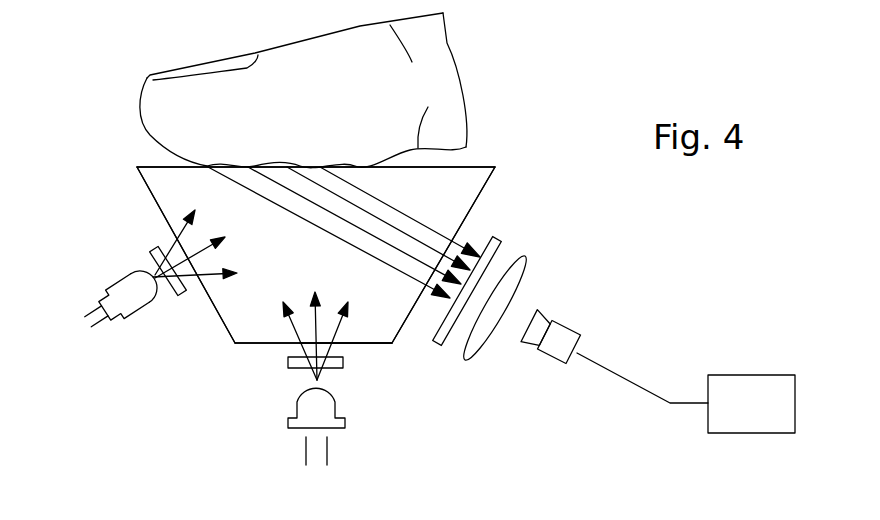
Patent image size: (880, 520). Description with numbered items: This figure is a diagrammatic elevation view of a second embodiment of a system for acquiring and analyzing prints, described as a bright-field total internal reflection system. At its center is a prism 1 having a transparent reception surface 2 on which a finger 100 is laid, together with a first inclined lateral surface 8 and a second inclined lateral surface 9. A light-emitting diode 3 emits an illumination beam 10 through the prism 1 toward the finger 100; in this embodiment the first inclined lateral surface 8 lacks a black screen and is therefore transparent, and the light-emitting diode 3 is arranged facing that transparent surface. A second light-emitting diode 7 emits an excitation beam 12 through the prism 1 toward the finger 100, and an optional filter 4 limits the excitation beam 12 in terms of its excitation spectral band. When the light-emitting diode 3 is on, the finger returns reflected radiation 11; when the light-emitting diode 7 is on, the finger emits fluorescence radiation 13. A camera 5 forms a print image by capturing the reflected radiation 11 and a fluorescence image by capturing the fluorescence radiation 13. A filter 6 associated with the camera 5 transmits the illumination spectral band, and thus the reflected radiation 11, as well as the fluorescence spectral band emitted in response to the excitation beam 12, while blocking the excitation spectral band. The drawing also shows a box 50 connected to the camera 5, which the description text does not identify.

The prism 1 is at (163, 182).
The transparent reception surface 2 is at (477, 154).
The light-emitting diode 3 is at (124, 282).
The filter 4 is at (288, 362).
The camera 5 is at (563, 328).
The filter 6 is at (497, 247).
The light-emitting diode 7 is at (292, 420).
The first inclined lateral surface 8 is at (213, 335).
The second inclined lateral surface 9 is at (491, 202).
The illumination beam 10 is at (160, 227).
The reflected radiation 11 is at (344, 232).
The excitation beam 12 is at (330, 333).
The fluorescence radiation 13 is at (358, 222).
The control unit 50 is at (751, 404).
The finger 100 is at (453, 67).